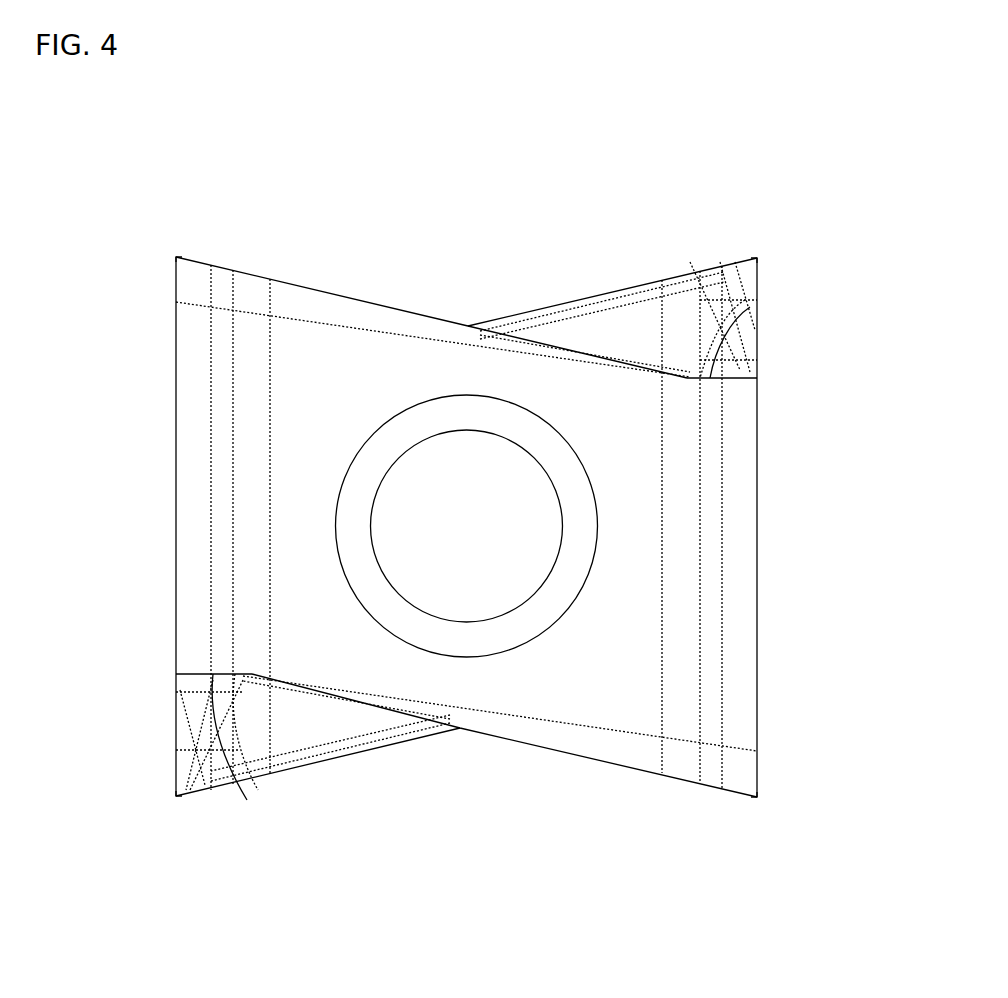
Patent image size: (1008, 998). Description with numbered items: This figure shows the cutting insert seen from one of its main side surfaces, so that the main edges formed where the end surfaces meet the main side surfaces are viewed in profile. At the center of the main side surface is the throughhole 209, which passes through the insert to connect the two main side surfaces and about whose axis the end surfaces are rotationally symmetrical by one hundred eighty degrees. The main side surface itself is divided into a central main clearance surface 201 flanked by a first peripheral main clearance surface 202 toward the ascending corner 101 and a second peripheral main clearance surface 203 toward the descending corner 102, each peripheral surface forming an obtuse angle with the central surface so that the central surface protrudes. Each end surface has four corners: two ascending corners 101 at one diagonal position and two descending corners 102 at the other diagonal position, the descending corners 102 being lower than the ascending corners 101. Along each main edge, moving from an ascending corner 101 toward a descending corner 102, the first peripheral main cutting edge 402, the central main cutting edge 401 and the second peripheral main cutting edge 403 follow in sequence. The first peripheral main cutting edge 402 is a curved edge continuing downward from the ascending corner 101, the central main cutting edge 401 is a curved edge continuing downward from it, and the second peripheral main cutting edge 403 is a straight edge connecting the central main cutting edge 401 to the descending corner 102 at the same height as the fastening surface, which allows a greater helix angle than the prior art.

The ascending corner 101 is at (176, 257).
The descending corner 102 is at (741, 378).
The central main clearance surface 201 is at (387, 355).
The first peripheral main clearance surface 202 is at (220, 350).
The second peripheral main clearance surface 203 is at (712, 438).
The throughhole 209 is at (520, 547).
The central main cutting edge 401 is at (420, 314).
The first peripheral main cutting edge 402 is at (220, 268).
The second peripheral main cutting edge 403 is at (750, 307).